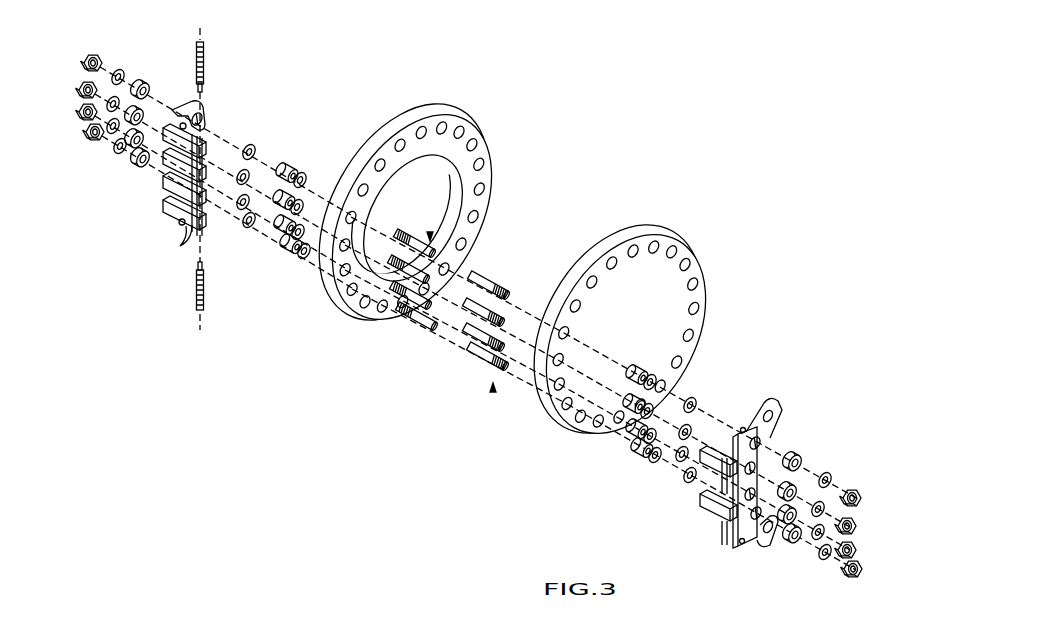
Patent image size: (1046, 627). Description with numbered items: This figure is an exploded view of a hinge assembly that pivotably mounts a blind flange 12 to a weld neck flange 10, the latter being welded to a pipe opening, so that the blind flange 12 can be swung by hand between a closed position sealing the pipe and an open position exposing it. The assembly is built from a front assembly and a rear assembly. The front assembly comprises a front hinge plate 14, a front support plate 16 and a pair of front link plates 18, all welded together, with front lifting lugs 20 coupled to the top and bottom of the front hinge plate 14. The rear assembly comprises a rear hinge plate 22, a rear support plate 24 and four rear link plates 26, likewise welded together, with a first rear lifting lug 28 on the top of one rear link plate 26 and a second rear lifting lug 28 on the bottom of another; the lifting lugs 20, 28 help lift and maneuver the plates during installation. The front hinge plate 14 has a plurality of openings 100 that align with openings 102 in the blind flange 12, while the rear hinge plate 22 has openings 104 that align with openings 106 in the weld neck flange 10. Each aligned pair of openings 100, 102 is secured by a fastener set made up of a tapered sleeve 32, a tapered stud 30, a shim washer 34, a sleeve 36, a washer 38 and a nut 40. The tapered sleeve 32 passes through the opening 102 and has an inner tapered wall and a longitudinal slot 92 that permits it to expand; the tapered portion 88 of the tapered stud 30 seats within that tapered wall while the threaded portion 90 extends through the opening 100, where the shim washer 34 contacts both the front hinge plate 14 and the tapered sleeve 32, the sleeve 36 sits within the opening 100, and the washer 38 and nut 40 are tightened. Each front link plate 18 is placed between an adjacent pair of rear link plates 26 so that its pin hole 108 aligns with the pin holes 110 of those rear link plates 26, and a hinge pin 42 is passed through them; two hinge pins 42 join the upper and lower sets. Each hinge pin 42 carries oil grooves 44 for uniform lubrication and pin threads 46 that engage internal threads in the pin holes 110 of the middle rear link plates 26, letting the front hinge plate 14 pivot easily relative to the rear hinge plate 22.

The weld neck flange 10 is at (437, 104).
The blind flange 12 is at (636, 232).
The front hinge plate 14 is at (768, 404).
The front support plate 16 is at (726, 534).
The front link plates 18 is at (700, 505).
The front lifting lugs 20 is at (743, 427).
The rear hinge plate 22 is at (203, 104).
The rear support plate 24 is at (166, 184).
The rear link plates 26 is at (208, 140).
The rear lifting lugs 28 is at (184, 122).
The tapered stud 30 is at (430, 236).
The tapered sleeve 32 is at (291, 167).
The shim washer 34 is at (254, 145).
The sleeve 36 is at (146, 85).
The washer 38 is at (122, 72).
The nut 40 is at (97, 56).
The hinge pin 42 is at (200, 44).
The oil grooves 44 is at (197, 62).
The pin threads 46 is at (204, 86).
The tapered portion 88 is at (440, 262).
The threaded portion 90 is at (401, 238).
The slot 92 is at (308, 176).
The openings 100 is at (760, 443).
The openings 102 is at (548, 418).
The openings 104 is at (204, 119).
The openings 106 is at (333, 290).
The pin hole 108 is at (712, 447).
The pin holes 110 is at (184, 236).